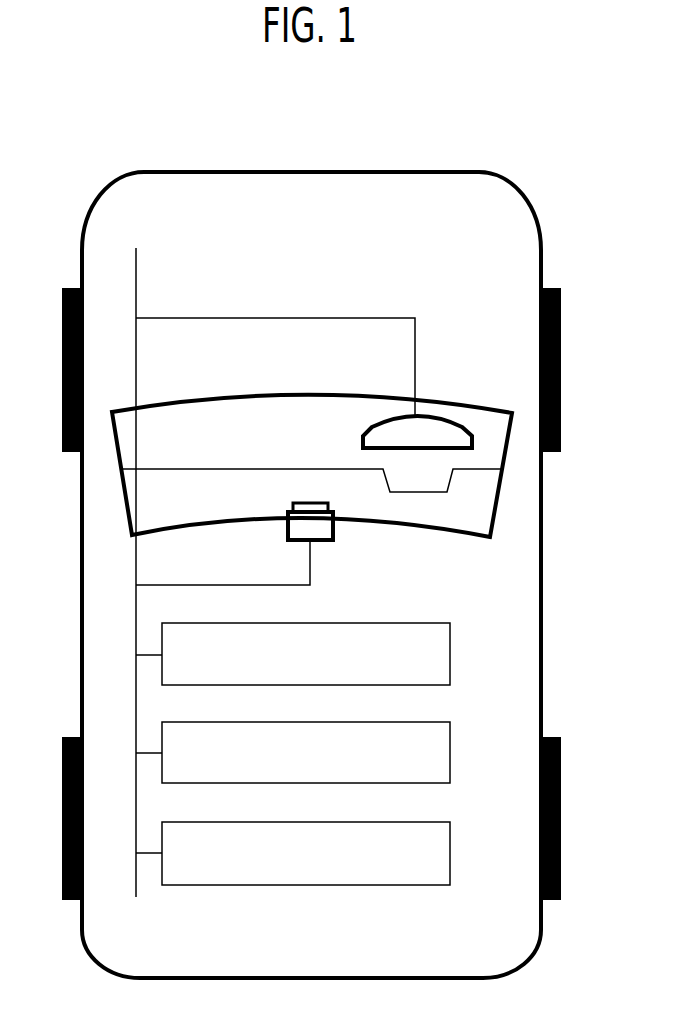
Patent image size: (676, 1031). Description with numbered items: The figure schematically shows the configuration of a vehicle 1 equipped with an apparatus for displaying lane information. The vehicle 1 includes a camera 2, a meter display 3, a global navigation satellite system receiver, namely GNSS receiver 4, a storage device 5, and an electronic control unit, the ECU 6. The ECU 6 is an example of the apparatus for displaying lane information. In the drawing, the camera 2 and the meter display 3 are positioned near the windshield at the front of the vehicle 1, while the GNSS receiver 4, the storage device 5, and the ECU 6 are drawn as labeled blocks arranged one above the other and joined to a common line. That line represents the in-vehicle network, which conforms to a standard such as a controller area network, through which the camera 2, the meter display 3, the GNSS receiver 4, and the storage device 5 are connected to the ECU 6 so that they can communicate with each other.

The vehicle 1 is at (444, 158).
The camera 2 is at (337, 533).
The meter display 3 is at (392, 416).
The global navigation satellite system (GNSS) receiver 4 is at (450, 670).
The storage device 5 is at (450, 772).
The electronic control unit (ECU) 6 is at (450, 858).